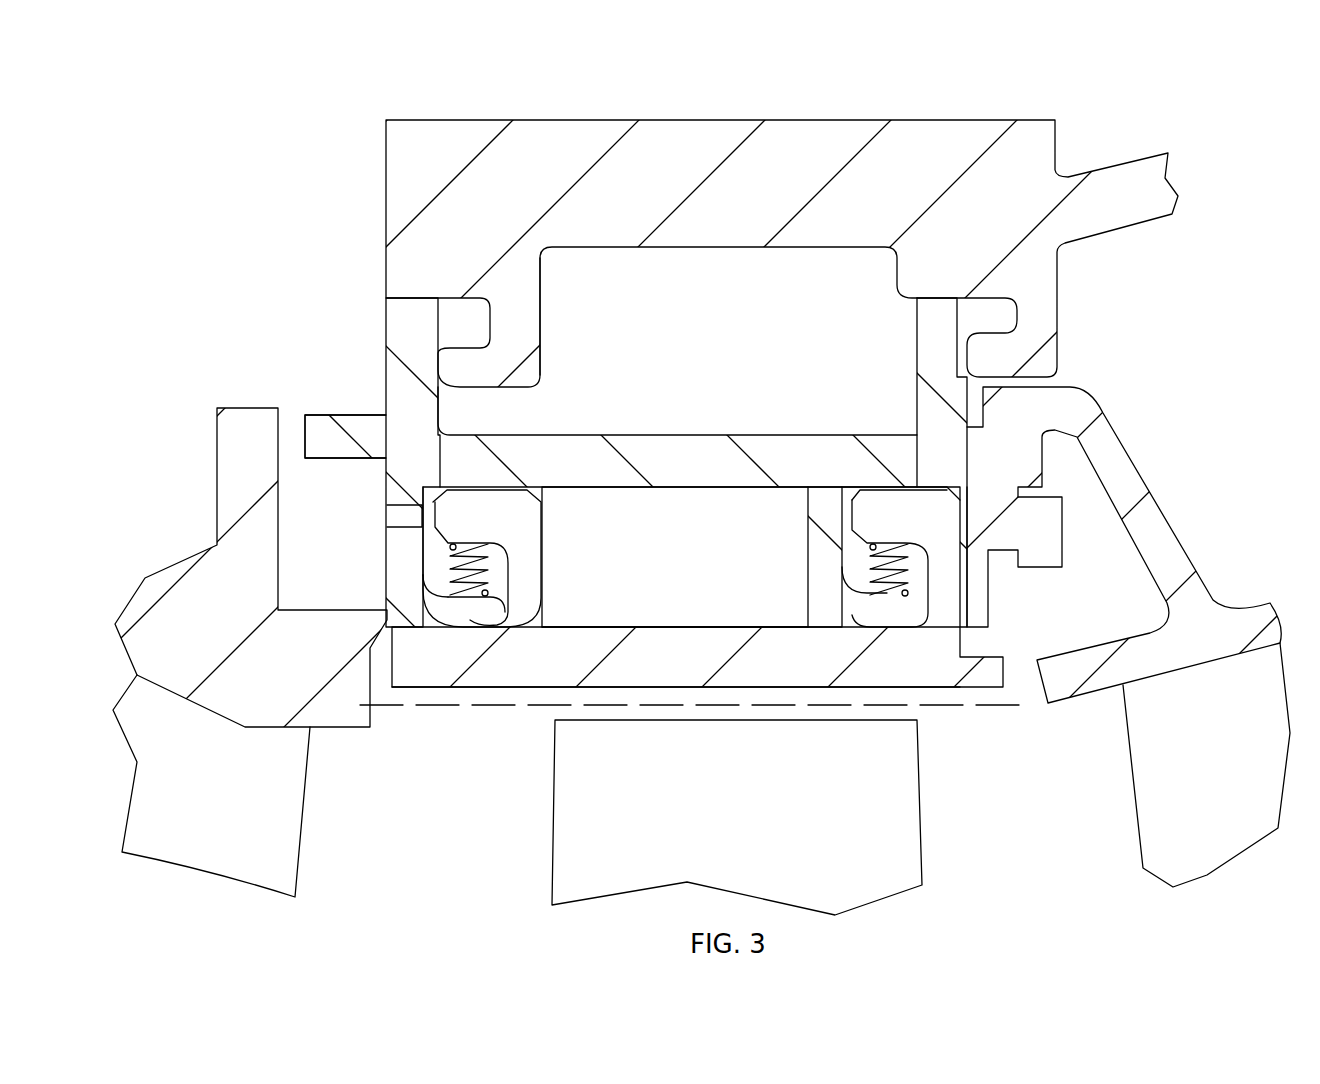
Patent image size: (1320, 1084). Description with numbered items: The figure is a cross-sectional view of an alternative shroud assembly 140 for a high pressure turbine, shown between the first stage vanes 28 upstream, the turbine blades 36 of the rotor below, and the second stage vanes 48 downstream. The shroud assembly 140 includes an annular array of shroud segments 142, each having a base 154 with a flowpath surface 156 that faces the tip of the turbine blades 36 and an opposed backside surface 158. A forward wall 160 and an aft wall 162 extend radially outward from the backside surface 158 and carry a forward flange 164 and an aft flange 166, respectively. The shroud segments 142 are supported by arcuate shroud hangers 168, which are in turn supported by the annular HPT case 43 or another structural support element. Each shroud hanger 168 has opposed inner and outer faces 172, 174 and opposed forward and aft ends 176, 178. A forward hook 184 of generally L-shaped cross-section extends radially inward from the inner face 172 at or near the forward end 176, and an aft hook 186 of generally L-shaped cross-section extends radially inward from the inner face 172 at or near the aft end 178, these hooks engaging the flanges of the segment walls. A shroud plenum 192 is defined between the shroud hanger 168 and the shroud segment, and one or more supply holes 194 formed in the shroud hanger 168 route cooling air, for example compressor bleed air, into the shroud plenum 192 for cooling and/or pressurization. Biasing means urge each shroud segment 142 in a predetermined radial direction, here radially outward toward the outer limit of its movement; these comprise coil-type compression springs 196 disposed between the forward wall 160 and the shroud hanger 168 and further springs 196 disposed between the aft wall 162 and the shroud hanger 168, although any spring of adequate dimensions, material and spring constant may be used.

The shroud assembly 140 is at (1068, 80).
The HPT case 43 is at (400, 140).
The shroud hanger 168 is at (376, 404).
The forward end 176 is at (400, 469).
The supply holes 194 is at (400, 506).
The forward flange 164 is at (398, 556).
The forward hook 184 is at (420, 610).
The springs 196 is at (490, 563).
The forward wall 160 is at (537, 577).
The backside surface 158 is at (563, 622).
The shroud plenum 192 is at (698, 546).
The inner face 172 is at (779, 490).
The outer face 174 is at (780, 432).
The aft flange 166 is at (883, 503).
The aft end 178 is at (1035, 453).
The aft wall 162 is at (822, 552).
The aft hook 186 is at (832, 610).
The base 154 is at (415, 678).
The flowpath surface 156 is at (523, 690).
The shroud segments 142 is at (960, 700).
The first stage vanes 28 is at (247, 791).
The turbine blades 36 is at (743, 791).
The second stage vanes 48 is at (1201, 751).